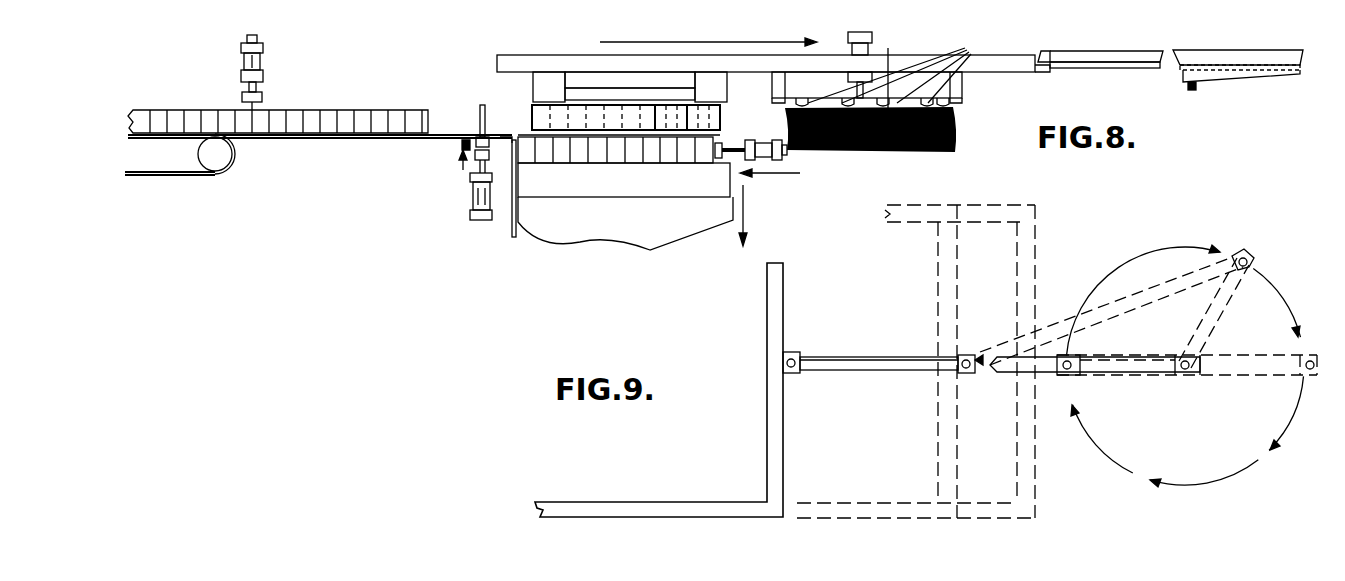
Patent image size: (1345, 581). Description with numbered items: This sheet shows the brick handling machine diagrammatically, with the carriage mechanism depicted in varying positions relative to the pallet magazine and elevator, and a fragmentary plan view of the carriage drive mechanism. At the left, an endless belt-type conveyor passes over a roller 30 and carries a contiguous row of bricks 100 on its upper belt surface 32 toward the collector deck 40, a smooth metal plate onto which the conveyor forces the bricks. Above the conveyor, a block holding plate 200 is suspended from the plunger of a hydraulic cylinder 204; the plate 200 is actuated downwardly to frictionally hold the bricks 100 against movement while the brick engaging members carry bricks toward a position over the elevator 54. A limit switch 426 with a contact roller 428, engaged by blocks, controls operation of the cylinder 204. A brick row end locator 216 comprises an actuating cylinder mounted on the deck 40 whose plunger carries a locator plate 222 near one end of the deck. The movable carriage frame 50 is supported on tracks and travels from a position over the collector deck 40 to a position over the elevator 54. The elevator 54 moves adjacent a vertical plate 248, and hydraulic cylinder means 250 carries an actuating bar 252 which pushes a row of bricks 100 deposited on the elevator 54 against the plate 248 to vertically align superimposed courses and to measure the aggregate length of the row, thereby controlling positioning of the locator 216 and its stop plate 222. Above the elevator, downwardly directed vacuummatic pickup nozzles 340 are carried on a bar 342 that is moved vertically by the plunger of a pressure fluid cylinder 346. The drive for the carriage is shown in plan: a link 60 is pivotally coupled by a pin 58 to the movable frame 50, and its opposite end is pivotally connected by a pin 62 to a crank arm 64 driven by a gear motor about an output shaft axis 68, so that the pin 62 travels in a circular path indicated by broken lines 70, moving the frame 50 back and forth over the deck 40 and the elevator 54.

In FIG. 8, the roller 30 is at (216, 163).
In FIG. 8, the upper belt surface 32 is at (185, 130).
In FIG. 8, the collector deck 40 is at (441, 135).
In FIG. 8, the movable carriage frame 50 is at (591, 60).
In FIG. 9, the movable carriage frame 50 is at (776, 443).
In FIG. 8, the elevator 54 is at (667, 162).
In FIG. 8, the pin 58 is at (1045, 52).
In FIG. 9, the pin 58 is at (793, 356).
In FIG. 8, the link 60 is at (1150, 55).
In FIG. 9, the link 60 is at (895, 365).
In FIG. 8, the pin 62 is at (1292, 72).
In FIG. 9, the pin 62 is at (1080, 377).
In FIG. 8, the crank arm 64 is at (1235, 72).
In FIG. 9, the crank arm 64 is at (1146, 360).
In FIG. 8, the output shaft axis 68 is at (1196, 86).
In FIG. 9, the output shaft axis 68 is at (1195, 360).
In FIG. 9, the broken lines 70 is at (1280, 425).
In FIG. 8, the bricks 100 is at (321, 108).
In FIG. 8, the block holding plate 200 is at (258, 104).
In FIG. 8, the hydraulic cylinder 204 is at (258, 65).
In FIG. 8, the brick row end locator 216 is at (470, 200).
In FIG. 8, the locator plate 222 is at (477, 119).
In FIG. 8, the vertical plate 248 is at (515, 192).
In FIG. 8, the hydraulic cylinder means 250 is at (784, 152).
In FIG. 8, the actuating bar 252 is at (720, 142).
In FIG. 8, the vacuummatic pickup nozzles 340 is at (893, 94).
In FIG. 8, the bar 342 is at (788, 72).
In FIG. 8, the pressure fluid cylinder 346 is at (872, 48).
In FIG. 8, the limit switch 426 is at (462, 172).
In FIG. 8, the contact roller 428 is at (483, 114).